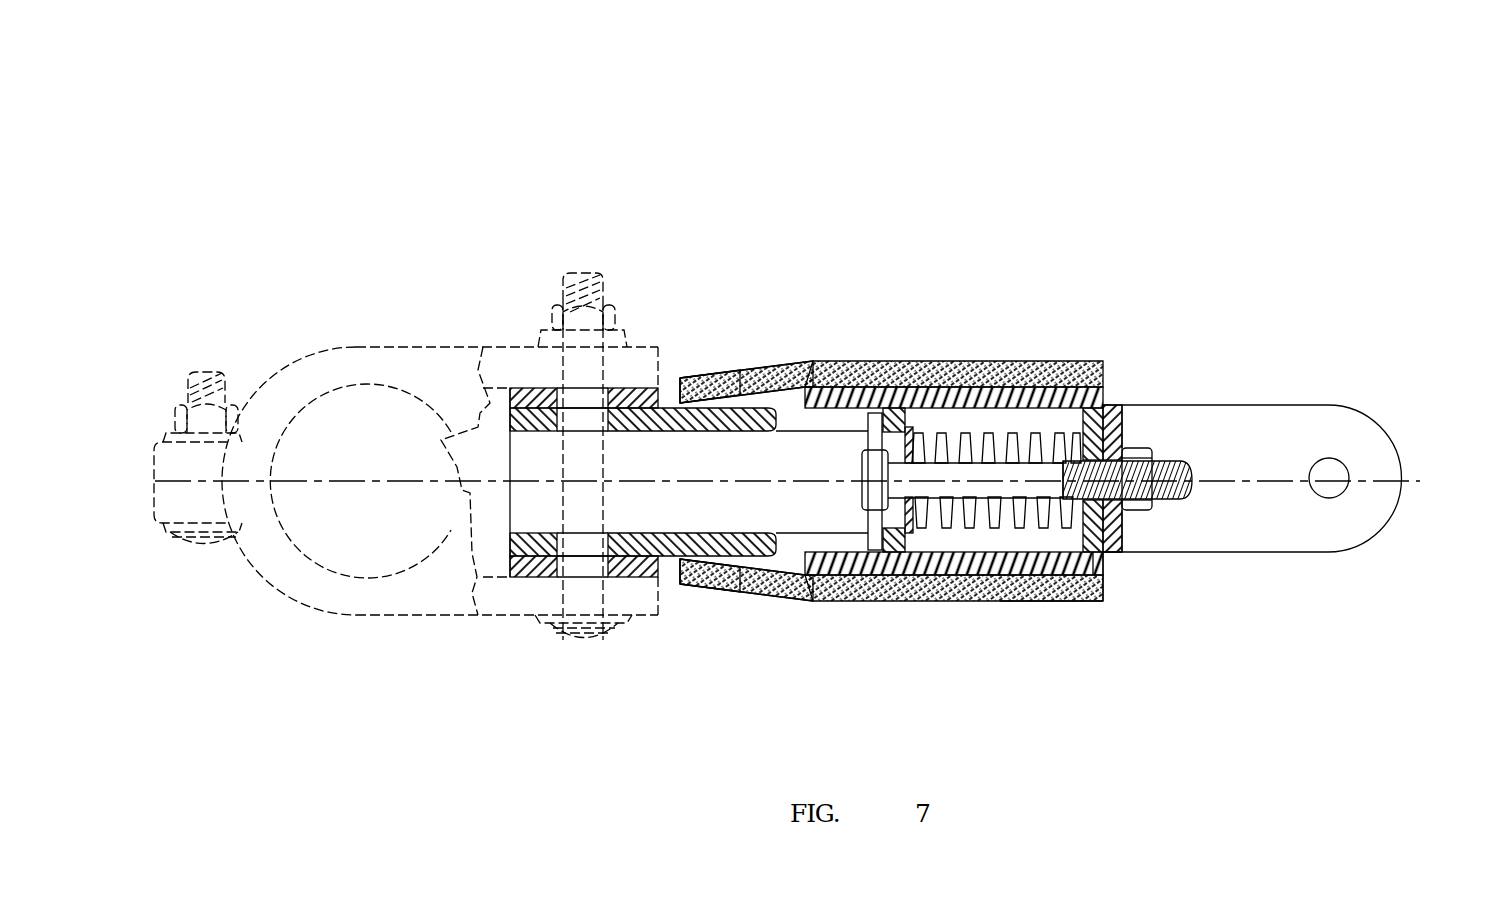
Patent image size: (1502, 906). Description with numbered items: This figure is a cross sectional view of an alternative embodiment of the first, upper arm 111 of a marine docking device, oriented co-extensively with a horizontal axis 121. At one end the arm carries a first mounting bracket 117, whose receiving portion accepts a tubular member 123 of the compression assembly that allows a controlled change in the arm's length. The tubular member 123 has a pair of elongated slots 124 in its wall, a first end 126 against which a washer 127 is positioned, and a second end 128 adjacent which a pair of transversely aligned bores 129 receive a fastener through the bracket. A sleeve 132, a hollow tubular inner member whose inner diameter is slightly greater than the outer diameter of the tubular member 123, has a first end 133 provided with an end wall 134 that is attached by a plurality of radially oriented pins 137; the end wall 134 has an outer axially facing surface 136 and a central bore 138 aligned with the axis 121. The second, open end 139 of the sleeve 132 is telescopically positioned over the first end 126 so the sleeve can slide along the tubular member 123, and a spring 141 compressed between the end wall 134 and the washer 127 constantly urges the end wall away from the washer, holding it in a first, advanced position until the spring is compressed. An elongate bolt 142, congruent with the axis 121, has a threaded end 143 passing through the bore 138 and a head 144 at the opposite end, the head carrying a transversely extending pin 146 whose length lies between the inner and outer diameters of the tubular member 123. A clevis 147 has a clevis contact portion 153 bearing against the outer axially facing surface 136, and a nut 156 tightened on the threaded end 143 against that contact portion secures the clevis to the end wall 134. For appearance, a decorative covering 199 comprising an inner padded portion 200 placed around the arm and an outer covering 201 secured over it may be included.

The first arm 111 is at (908, 238).
The first mounting bracket 117 is at (356, 340).
The horizontal axis 121 is at (1076, 456).
The tubular member 123 is at (711, 547).
The elongated slots 124 is at (774, 405).
The first end 126 is at (933, 552).
The washer 127 is at (918, 537).
The second end 128 is at (528, 550).
The transversely aligned bores 129 is at (562, 543).
The sleeve 132 is at (1052, 600).
The first end 133 is at (1107, 558).
The end wall 134 is at (1120, 523).
The outer axially facing surface 136 is at (1115, 405).
The radially oriented pins 137 is at (1087, 600).
The central bore 138 is at (1103, 408).
The second, open end 139 is at (800, 565).
The spring 141 is at (1023, 530).
The elongate bolt 142 is at (990, 473).
The threaded end 143 is at (1195, 484).
The head 144 is at (892, 548).
The transversely extending pin 146 is at (888, 412).
The clevis 147 is at (1296, 418).
The clevis contact portion 153 is at (1130, 440).
The nut 156 is at (1137, 470).
The decorative covering 199 is at (845, 352).
The inner padded portion 200 is at (685, 380).
The outer covering 201 is at (710, 375).